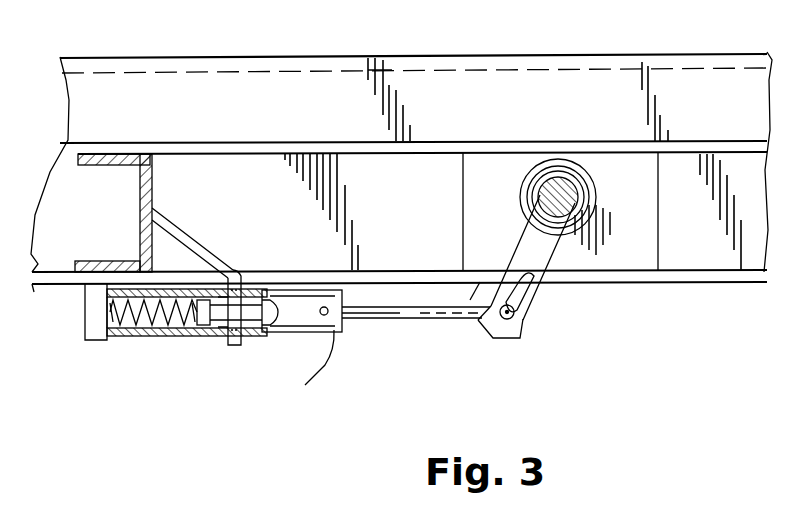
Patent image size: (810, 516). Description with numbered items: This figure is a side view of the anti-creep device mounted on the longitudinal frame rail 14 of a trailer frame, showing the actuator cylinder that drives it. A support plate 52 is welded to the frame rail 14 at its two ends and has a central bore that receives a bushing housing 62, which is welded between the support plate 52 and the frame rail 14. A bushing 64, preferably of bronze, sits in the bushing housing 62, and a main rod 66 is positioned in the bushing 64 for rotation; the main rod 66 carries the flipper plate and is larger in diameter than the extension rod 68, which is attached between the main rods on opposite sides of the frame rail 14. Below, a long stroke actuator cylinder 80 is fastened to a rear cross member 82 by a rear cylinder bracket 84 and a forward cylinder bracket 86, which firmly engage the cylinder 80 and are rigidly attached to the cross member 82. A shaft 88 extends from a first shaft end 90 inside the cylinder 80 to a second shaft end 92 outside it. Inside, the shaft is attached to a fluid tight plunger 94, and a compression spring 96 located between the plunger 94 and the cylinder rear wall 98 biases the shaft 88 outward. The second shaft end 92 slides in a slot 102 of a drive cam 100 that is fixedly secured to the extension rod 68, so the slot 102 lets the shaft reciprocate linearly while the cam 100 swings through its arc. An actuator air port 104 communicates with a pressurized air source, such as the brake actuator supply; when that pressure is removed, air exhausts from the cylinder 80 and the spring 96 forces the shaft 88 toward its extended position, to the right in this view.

The frame rail 14 is at (574, 55).
The support plate 52 is at (621, 262).
The bushing housing 62 is at (540, 160).
The bushing 64 is at (580, 165).
The main rod 66 is at (585, 205).
The extension rod 68 is at (590, 188).
The long stroke actuator cylinder 80 is at (190, 345).
The rear cross member 82 is at (153, 200).
The rear cylinder bracket 84 is at (85, 316).
The forward cylinder bracket 86 is at (229, 350).
The shaft 88 is at (380, 321).
The first shaft end 90 is at (252, 300).
The second shaft end 92 is at (497, 285).
The fluid tight plunger 94 is at (228, 298).
The compression spring 96 is at (150, 338).
The cylinder rear wall 98 is at (123, 286).
The drive cam 100 is at (524, 230).
The slot 102 is at (530, 306).
The actuator air port 104 is at (328, 308).